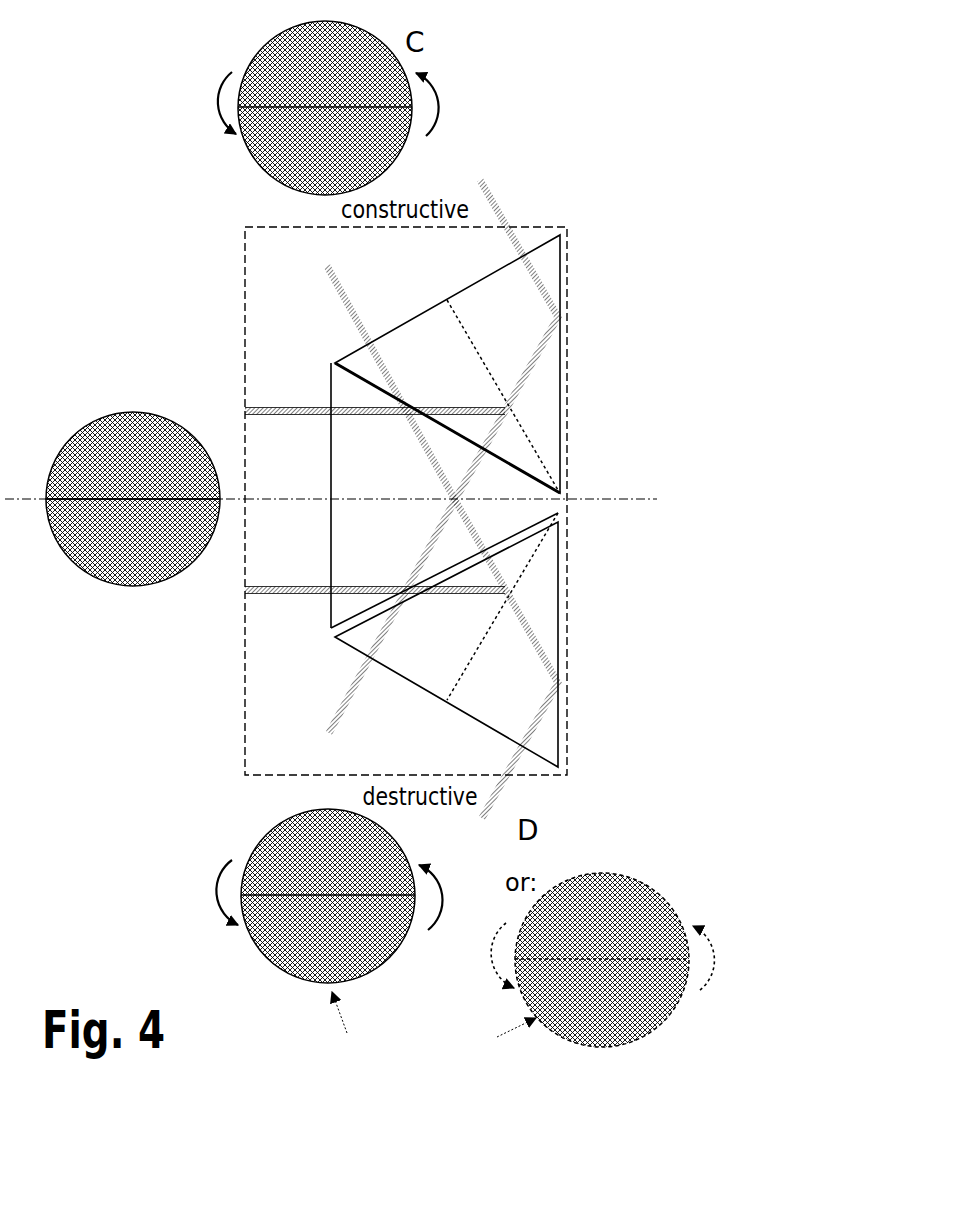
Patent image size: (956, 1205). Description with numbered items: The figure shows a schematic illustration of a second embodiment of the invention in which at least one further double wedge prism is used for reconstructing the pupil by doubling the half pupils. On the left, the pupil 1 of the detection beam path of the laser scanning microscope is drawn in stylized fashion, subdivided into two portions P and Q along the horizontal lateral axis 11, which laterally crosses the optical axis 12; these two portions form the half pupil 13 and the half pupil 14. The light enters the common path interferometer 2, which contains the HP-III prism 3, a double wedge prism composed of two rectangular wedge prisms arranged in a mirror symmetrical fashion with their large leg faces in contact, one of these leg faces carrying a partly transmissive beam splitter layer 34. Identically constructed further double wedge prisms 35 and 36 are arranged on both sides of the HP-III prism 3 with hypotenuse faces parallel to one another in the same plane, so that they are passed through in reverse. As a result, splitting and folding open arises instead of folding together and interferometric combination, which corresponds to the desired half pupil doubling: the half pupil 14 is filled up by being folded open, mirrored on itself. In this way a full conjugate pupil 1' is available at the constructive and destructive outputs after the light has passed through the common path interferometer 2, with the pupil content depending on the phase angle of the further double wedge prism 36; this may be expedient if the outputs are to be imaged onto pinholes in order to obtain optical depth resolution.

The pupil 1 is at (125, 512).
The conjugate pupil 1' is at (447, 550).
The common path interferometer 2 is at (245, 372).
The HP-III prism 3 is at (417, 501).
The lateral axis 11 is at (32, 500).
The optical axis 12 is at (593, 503).
The half pupil 13 is at (143, 412).
The half pupil 14 is at (152, 578).
The partly transmissive beam splitter layer 34 is at (487, 340).
The further double wedge prism 35 is at (397, 335).
The further double wedge prism 36 is at (348, 643).